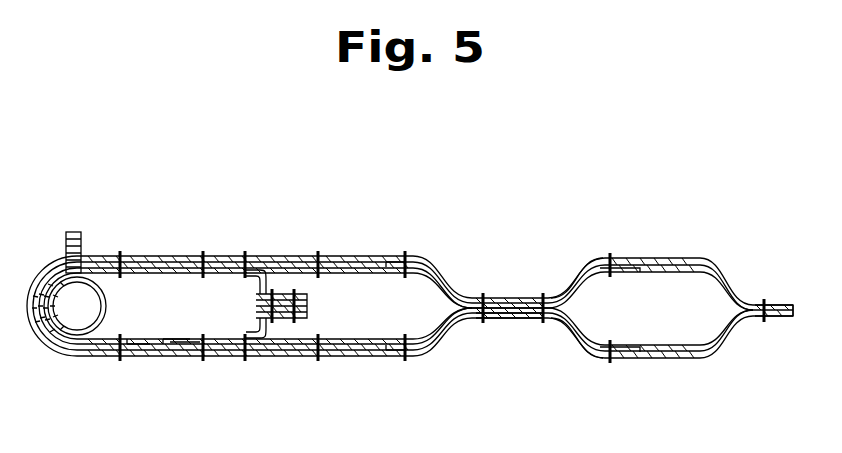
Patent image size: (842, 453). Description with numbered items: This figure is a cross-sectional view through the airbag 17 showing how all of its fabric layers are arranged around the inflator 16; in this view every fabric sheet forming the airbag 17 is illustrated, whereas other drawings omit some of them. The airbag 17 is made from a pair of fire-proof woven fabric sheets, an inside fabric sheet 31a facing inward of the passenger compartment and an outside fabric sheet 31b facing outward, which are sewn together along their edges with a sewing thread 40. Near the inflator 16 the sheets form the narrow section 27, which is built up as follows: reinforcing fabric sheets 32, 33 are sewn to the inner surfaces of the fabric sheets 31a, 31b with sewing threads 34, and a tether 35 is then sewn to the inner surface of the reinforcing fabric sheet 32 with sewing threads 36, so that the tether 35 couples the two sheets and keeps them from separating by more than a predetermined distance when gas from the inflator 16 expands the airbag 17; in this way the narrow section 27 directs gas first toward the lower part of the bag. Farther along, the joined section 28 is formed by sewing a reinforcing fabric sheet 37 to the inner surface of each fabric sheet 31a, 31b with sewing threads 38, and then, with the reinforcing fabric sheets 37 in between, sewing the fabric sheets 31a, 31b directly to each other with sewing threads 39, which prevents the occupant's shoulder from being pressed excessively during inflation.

The inflator 16 is at (42, 346).
The airbag 17 is at (482, 236).
The narrow section 27 is at (214, 250).
The joined section 28 is at (519, 290).
The inside fabric sheet 31a is at (292, 255).
The outside fabric sheet 31b is at (371, 361).
The reinforcing fabric sheet 32 is at (159, 347).
The reinforcing fabric sheet 33 is at (128, 347).
The sewing threads 34 is at (121, 338).
The tether 35 is at (260, 345).
The sewing threads 36 is at (289, 293).
The reinforcing fabric sheet 37 is at (576, 287).
The sewing threads 38 is at (408, 273).
The sewing threads 39 is at (493, 320).
The sewing thread 40 is at (763, 304).